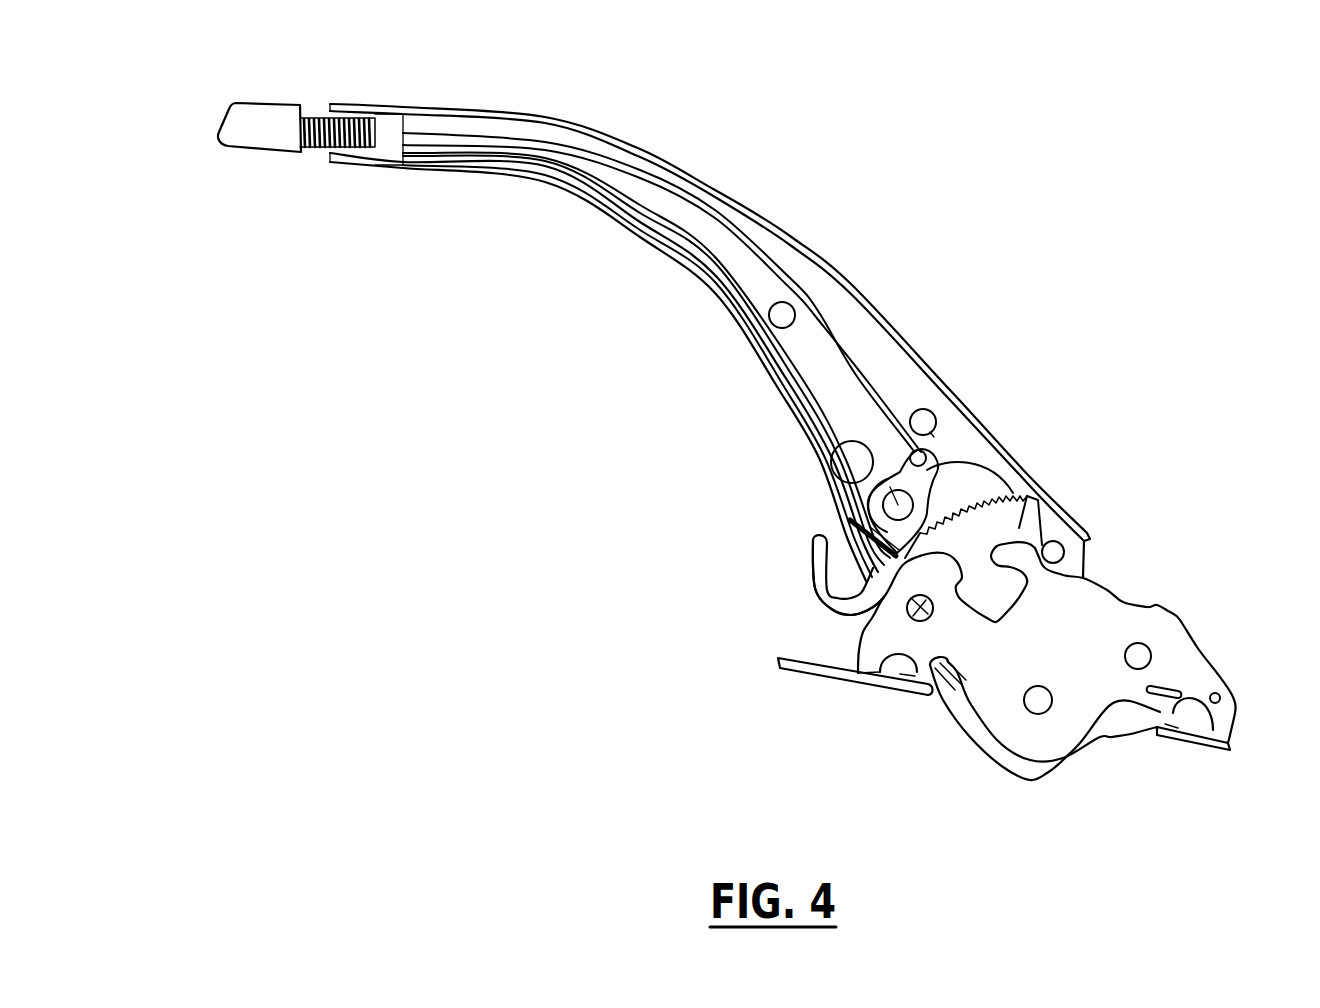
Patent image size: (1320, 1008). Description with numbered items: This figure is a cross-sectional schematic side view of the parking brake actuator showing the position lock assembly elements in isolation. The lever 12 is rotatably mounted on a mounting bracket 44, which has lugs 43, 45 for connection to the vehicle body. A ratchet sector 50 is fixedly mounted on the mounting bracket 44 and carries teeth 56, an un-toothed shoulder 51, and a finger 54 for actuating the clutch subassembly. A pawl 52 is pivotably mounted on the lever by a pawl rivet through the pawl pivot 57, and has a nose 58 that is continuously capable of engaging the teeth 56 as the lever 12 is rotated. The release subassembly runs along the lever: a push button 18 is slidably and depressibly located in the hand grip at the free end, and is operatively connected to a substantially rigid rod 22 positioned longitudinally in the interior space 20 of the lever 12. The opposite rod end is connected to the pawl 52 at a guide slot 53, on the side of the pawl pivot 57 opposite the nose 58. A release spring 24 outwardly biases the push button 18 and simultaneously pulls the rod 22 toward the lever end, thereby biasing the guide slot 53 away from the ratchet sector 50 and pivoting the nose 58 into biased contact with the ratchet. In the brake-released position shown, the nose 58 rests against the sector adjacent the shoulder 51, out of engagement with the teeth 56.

The lever 12 is at (703, 178).
The push button 18 is at (262, 113).
The interior space 20 is at (753, 278).
The rod 22 is at (820, 327).
The release spring 24 is at (322, 152).
The lug 43 is at (825, 668).
The mounting bracket 44 is at (1157, 605).
The lug 45 is at (1198, 745).
The ratchet sector 50 is at (1022, 528).
The shoulder 51 is at (867, 524).
The pawl 52 is at (932, 465).
The guide slot 53 is at (932, 430).
The finger 54 is at (811, 572).
The teeth 56 is at (1008, 490).
The pawl pivot 57 is at (862, 440).
The nose 58 is at (866, 492).